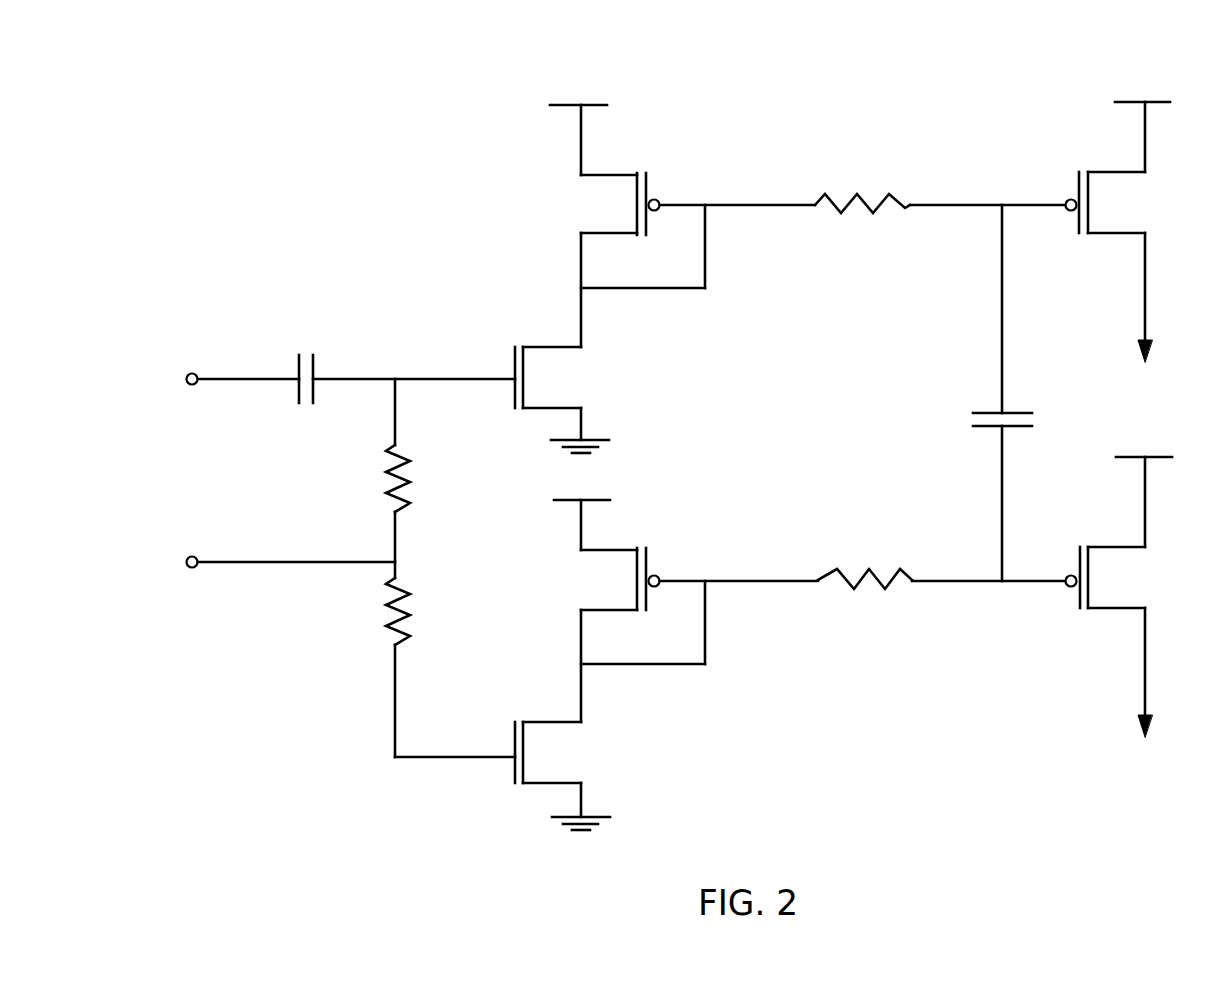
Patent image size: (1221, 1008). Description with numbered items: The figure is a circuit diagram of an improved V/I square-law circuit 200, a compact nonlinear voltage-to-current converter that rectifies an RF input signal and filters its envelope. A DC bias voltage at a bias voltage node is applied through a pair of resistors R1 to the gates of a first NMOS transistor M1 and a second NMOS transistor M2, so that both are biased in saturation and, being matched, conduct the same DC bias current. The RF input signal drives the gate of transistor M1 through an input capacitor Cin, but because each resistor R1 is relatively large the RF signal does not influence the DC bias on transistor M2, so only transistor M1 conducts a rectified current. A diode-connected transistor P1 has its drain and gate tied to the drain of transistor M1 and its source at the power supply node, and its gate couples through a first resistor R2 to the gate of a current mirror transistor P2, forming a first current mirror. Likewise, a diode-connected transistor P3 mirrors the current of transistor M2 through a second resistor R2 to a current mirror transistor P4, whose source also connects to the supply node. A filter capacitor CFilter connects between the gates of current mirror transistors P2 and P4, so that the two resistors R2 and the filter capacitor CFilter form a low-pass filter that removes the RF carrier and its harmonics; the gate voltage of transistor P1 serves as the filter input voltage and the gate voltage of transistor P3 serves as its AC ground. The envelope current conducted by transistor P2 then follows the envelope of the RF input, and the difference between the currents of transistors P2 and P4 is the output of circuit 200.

The improved V/I square-law circuit 200 is at (803, 33).
The input capacitor Cin is at (298, 362).
The pair of resistors R1 is at (377, 545).
The resistor R2 is at (863, 409).
The filter capacitor CFilter is at (967, 417).
The first NMOS transistor M1 is at (567, 377).
The second NMOS transistor M2 is at (567, 752).
The diode-connected transistor P1 is at (612, 204).
The current mirror transistor P2 is at (1124, 202).
The diode-connected transistor P3 is at (606, 579).
The current mirror transistor P4 is at (1124, 577).